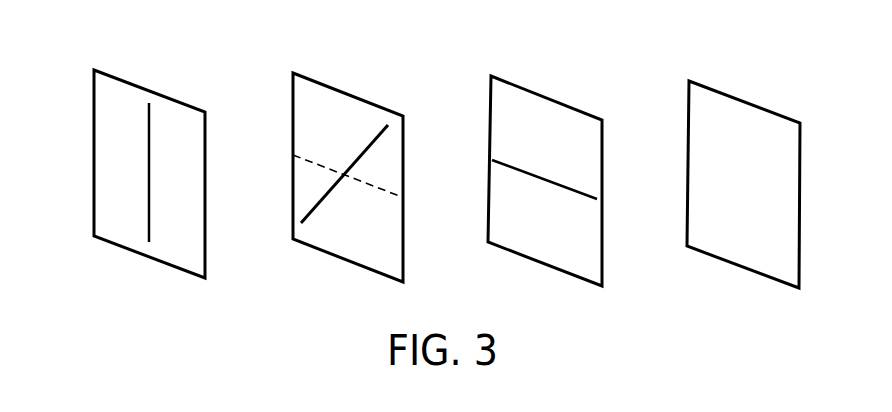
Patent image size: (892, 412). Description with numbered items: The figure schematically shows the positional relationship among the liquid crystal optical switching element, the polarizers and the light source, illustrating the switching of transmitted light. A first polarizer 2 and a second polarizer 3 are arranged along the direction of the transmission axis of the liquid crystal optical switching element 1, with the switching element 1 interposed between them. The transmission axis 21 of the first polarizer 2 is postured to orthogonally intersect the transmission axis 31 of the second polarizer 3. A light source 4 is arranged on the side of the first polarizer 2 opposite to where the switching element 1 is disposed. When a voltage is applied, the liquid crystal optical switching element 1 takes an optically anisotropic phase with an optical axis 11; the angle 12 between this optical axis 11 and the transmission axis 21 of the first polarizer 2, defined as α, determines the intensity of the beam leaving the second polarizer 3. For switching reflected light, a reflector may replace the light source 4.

The liquid crystal optical switching element 1 is at (367, 100).
The optical axis 11 is at (389, 127).
The angle 12 is at (355, 173).
The first polarizer 2 is at (545, 93).
The transmission axis 21 is at (595, 197).
The second polarizer 3 is at (138, 83).
The transmission axis 31 is at (150, 152).
The light source 4 is at (747, 100).